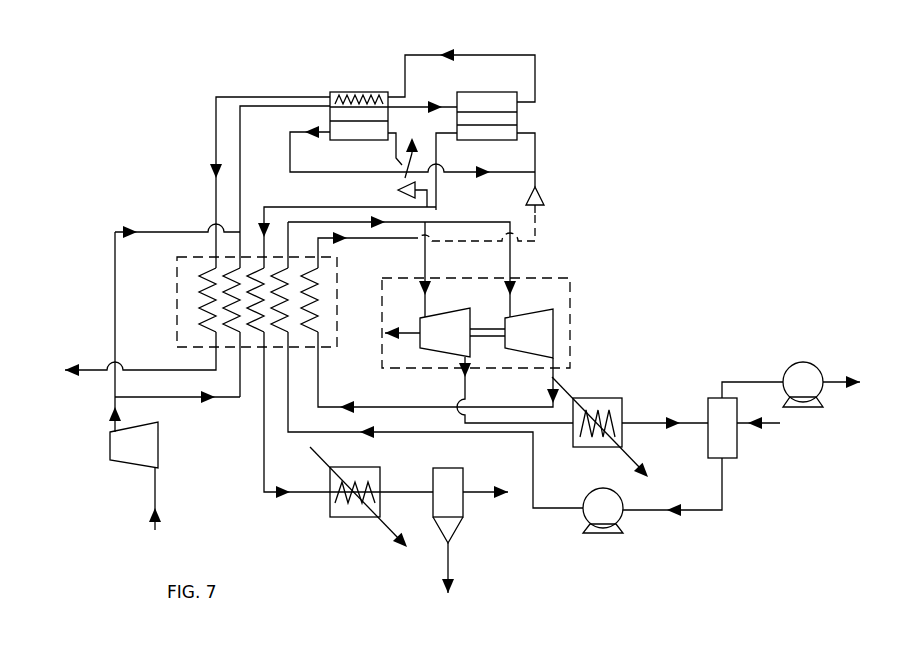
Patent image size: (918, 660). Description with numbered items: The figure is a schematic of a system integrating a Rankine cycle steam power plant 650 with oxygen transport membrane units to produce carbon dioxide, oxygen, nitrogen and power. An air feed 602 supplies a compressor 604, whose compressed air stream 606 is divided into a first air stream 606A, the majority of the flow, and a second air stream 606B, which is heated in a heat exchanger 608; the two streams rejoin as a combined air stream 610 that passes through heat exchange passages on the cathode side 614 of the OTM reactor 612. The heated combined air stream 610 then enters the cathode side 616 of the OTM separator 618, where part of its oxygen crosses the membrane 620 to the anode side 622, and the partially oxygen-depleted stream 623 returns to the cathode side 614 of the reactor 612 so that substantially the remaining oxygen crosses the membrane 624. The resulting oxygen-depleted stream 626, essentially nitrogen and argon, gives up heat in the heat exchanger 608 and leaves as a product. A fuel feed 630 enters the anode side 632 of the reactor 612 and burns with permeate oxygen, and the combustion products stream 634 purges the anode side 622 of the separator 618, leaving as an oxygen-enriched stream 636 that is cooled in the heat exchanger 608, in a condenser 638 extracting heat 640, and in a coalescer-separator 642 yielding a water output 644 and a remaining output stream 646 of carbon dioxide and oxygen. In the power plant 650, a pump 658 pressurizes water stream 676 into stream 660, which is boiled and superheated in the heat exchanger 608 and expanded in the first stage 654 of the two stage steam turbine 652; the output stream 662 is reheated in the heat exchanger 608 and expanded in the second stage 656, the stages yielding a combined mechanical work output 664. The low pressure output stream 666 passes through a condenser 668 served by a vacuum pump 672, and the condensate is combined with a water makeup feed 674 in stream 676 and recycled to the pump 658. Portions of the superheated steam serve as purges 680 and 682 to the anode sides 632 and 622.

The air feed 602 is at (157, 528).
The compressor 604 is at (143, 450).
The compressed air stream 606 is at (113, 427).
The first air stream 606A is at (113, 333).
The second air stream 606B is at (168, 398).
The heat exchanger 608 is at (340, 273).
The combined air stream 610 is at (240, 130).
The OTM reactor 612 is at (342, 72).
The cathode side 614 is at (333, 103).
The cathode side 616 is at (480, 93).
The OTM separator 618 is at (487, 100).
The membrane 620 is at (500, 118).
The anode side 622 is at (496, 134).
The partially oxygen-depleted stream 623 is at (535, 83).
The membrane 624 is at (383, 92).
The oxygen-depleted stream 626 is at (216, 97).
The fuel feed 630 is at (398, 189).
The anode side 632 is at (372, 143).
The combustion products stream 634 is at (332, 175).
The oxygen-enriched stream 636 is at (437, 182).
The condenser 638 is at (345, 467).
The heat 640 is at (378, 522).
The coalescer-separator 642 is at (464, 470).
The water output 644 is at (450, 565).
The remaining output stream 646 is at (468, 496).
The power plant 650 is at (654, 339).
The two stage steam turbine 652 is at (572, 277).
The first stage 654 is at (533, 333).
The second stage 656 is at (440, 327).
The pump 658 is at (598, 510).
The stream 660 is at (560, 510).
The output stream 662 is at (372, 407).
The combined mechanical work output 664 is at (401, 326).
The low pressure output stream 666 is at (545, 420).
The condenser 668 is at (597, 398).
The vacuum pump 672 is at (803, 378).
The water makeup feed 674 is at (765, 427).
The stream 676 is at (738, 460).
The purge 680 is at (450, 207).
The purge 682 is at (546, 205).